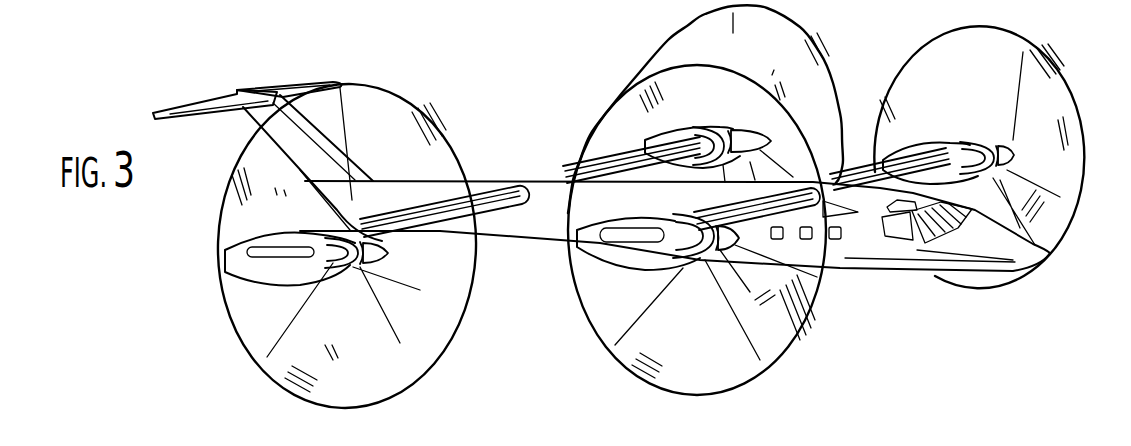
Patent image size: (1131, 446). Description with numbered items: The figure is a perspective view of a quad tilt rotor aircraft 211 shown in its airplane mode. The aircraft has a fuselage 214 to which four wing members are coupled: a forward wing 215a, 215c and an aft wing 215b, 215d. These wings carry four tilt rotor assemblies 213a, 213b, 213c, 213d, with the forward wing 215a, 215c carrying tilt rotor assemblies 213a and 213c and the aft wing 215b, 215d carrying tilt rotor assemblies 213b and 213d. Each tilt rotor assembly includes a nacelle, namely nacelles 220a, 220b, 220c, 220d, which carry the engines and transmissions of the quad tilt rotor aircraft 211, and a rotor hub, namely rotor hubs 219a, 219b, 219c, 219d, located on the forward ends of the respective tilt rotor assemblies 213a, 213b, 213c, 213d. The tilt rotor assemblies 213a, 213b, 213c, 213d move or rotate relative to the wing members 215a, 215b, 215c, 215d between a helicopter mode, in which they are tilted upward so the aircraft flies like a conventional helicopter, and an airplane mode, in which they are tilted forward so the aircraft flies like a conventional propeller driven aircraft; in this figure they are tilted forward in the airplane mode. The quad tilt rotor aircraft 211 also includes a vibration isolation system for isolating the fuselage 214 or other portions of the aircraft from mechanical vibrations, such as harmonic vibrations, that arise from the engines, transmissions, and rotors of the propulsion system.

The quad tilt rotor aircraft 211 is at (556, 58).
The tilt rotor assembly 213a is at (978, 117).
The tilt rotor assembly 213b is at (716, 108).
The tilt rotor assembly 213c is at (656, 282).
The tilt rotor assembly 213d is at (196, 279).
The fuselage 214 is at (900, 258).
The forward wing 215a is at (856, 175).
The aft wing 215b is at (560, 170).
The forward wing 215c is at (700, 203).
The aft wing 215d is at (480, 197).
The rotor hub 219a is at (1002, 146).
The rotor hub 219b is at (765, 130).
The rotor hub 219c is at (704, 254).
The rotor hub 219d is at (360, 266).
The nacelle 220a is at (936, 143).
The nacelle 220b is at (650, 144).
The nacelle 220c is at (627, 254).
The nacelle 220d is at (281, 280).